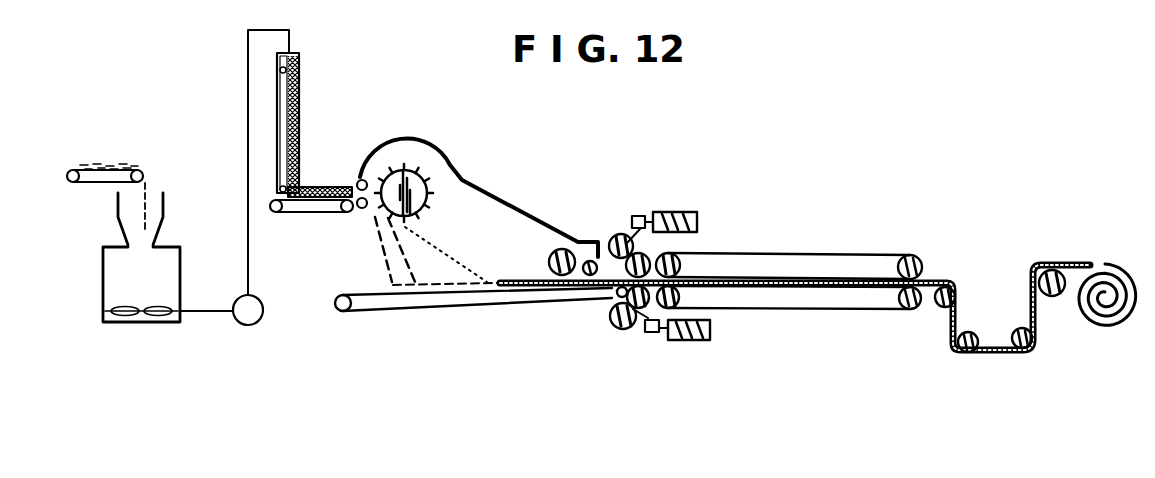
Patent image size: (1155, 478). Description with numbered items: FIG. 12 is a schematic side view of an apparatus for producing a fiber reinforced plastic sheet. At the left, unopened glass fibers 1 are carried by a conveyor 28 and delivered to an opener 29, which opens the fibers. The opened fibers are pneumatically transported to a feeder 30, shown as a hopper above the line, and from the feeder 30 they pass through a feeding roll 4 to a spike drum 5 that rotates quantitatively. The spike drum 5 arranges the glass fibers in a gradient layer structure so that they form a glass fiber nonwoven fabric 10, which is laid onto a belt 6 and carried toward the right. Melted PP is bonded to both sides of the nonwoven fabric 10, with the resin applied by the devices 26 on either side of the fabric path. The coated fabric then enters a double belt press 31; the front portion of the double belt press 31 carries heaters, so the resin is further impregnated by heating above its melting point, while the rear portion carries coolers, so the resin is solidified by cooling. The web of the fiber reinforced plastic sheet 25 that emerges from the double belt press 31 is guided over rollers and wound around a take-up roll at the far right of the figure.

The unopened glass fibers 1 is at (103, 163).
The feeding roll 4 is at (357, 182).
The spike drum 5 is at (420, 188).
The conveyor belt 6 is at (408, 313).
The glass fiber nonwoven fabric 10 is at (557, 287).
The fiber reinforced plastic sheet 25 is at (1076, 265).
The heating devices 26 is at (680, 212).
The conveyor 28 is at (95, 183).
The opener 29 is at (103, 280).
The feeder 30 is at (300, 108).
The double belt press 31 is at (808, 254).